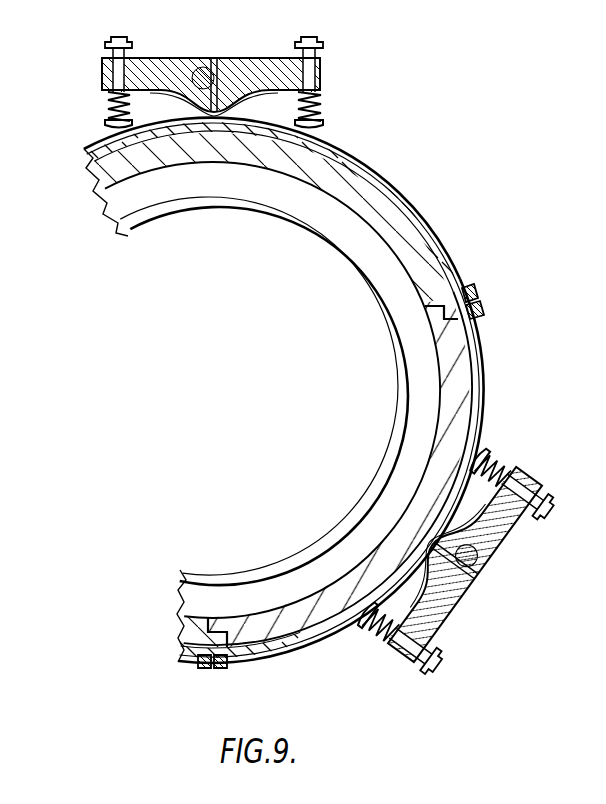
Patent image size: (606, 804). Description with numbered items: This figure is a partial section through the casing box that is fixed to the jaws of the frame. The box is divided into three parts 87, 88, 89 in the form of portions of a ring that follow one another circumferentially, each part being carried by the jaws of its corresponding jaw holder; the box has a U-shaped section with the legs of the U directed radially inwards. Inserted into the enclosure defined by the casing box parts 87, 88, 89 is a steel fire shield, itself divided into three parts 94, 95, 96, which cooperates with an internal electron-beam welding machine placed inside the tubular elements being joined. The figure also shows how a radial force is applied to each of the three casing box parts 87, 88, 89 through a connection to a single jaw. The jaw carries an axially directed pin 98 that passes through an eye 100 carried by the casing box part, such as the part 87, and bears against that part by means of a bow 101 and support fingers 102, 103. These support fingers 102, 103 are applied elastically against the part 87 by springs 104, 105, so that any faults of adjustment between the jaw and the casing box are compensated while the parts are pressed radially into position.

The casing box part 87 is at (430, 236).
The casing box part 88 is at (486, 405).
The casing box part 89 is at (180, 660).
The fire shield part 94 is at (423, 263).
The fire shield part 95 is at (270, 628).
The fire shield part 96 is at (216, 668).
The pin 98 is at (203, 68).
The eye 100 is at (243, 112).
The bow 101 is at (103, 70).
The support finger 102 is at (108, 127).
The support finger 103 is at (322, 125).
The spring 104 is at (108, 105).
The spring 105 is at (324, 104).